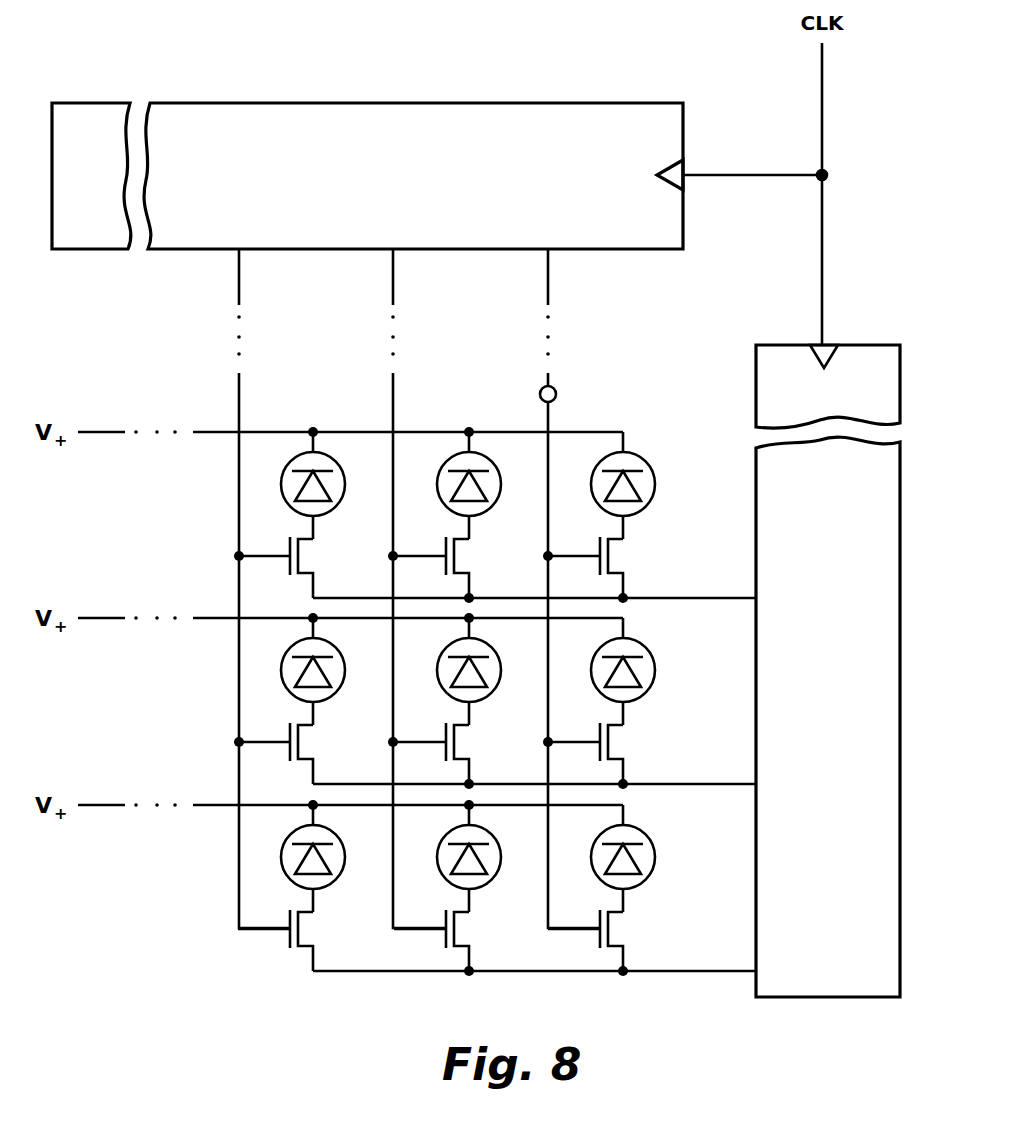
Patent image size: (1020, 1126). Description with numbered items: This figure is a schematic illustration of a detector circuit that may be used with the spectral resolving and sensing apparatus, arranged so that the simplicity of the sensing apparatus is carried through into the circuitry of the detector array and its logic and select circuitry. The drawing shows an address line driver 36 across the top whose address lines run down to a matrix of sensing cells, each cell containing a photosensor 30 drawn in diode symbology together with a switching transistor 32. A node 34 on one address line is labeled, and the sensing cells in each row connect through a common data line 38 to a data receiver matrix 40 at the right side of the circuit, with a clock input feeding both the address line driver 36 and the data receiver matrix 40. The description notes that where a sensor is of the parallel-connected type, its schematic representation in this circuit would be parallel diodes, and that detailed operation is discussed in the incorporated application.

The light emitting diode 30 is at (633, 453).
The transistor 32 is at (618, 567).
The address line node 34 is at (554, 389).
The address line driver 36 is at (500, 102).
The data line 38 is at (667, 594).
The data receiver matrix 40 is at (751, 365).